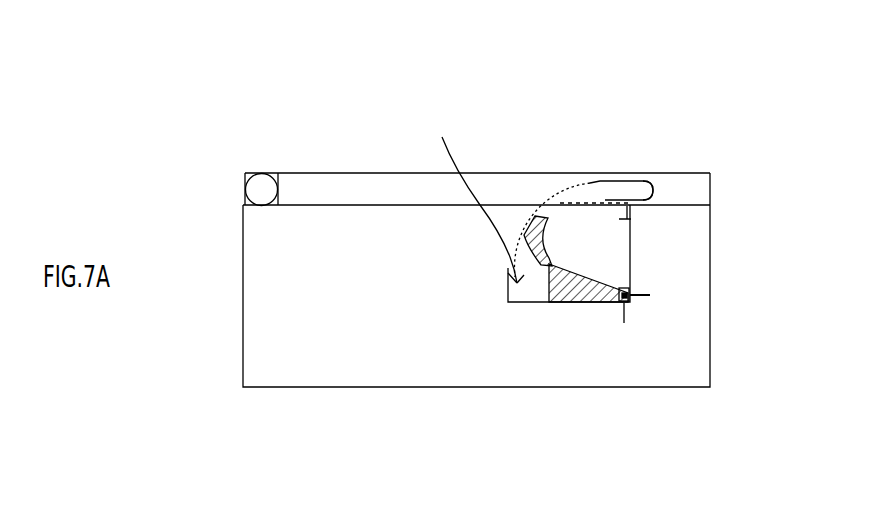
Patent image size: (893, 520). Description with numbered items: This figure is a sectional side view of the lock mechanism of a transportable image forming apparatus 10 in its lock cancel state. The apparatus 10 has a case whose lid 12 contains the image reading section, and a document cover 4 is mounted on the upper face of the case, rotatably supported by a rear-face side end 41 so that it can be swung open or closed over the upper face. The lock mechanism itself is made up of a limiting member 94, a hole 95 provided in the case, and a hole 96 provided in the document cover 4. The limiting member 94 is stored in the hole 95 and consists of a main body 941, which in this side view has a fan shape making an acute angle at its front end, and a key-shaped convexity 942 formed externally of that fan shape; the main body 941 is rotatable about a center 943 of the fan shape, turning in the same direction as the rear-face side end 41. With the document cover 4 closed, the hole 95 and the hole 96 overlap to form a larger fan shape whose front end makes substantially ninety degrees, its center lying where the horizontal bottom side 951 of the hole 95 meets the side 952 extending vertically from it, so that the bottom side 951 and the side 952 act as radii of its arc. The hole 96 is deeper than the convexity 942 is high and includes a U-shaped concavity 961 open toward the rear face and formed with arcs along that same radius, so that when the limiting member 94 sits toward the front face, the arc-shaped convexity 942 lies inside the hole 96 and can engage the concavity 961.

The transportable image forming apparatus 10 is at (716, 78).
The document cover 4 is at (308, 185).
The rear-face side end 41 is at (258, 190).
The lid 12 is at (270, 287).
The limiting member 94 is at (603, 250).
The main body 941 is at (575, 290).
The convexity 942 is at (533, 255).
The center 943 is at (650, 295).
The hole 95 is at (475, 194).
The bottom side 951 is at (608, 302).
The side 952 is at (633, 240).
The hole 96 is at (614, 190).
The U-shaped concavity 961 is at (652, 195).